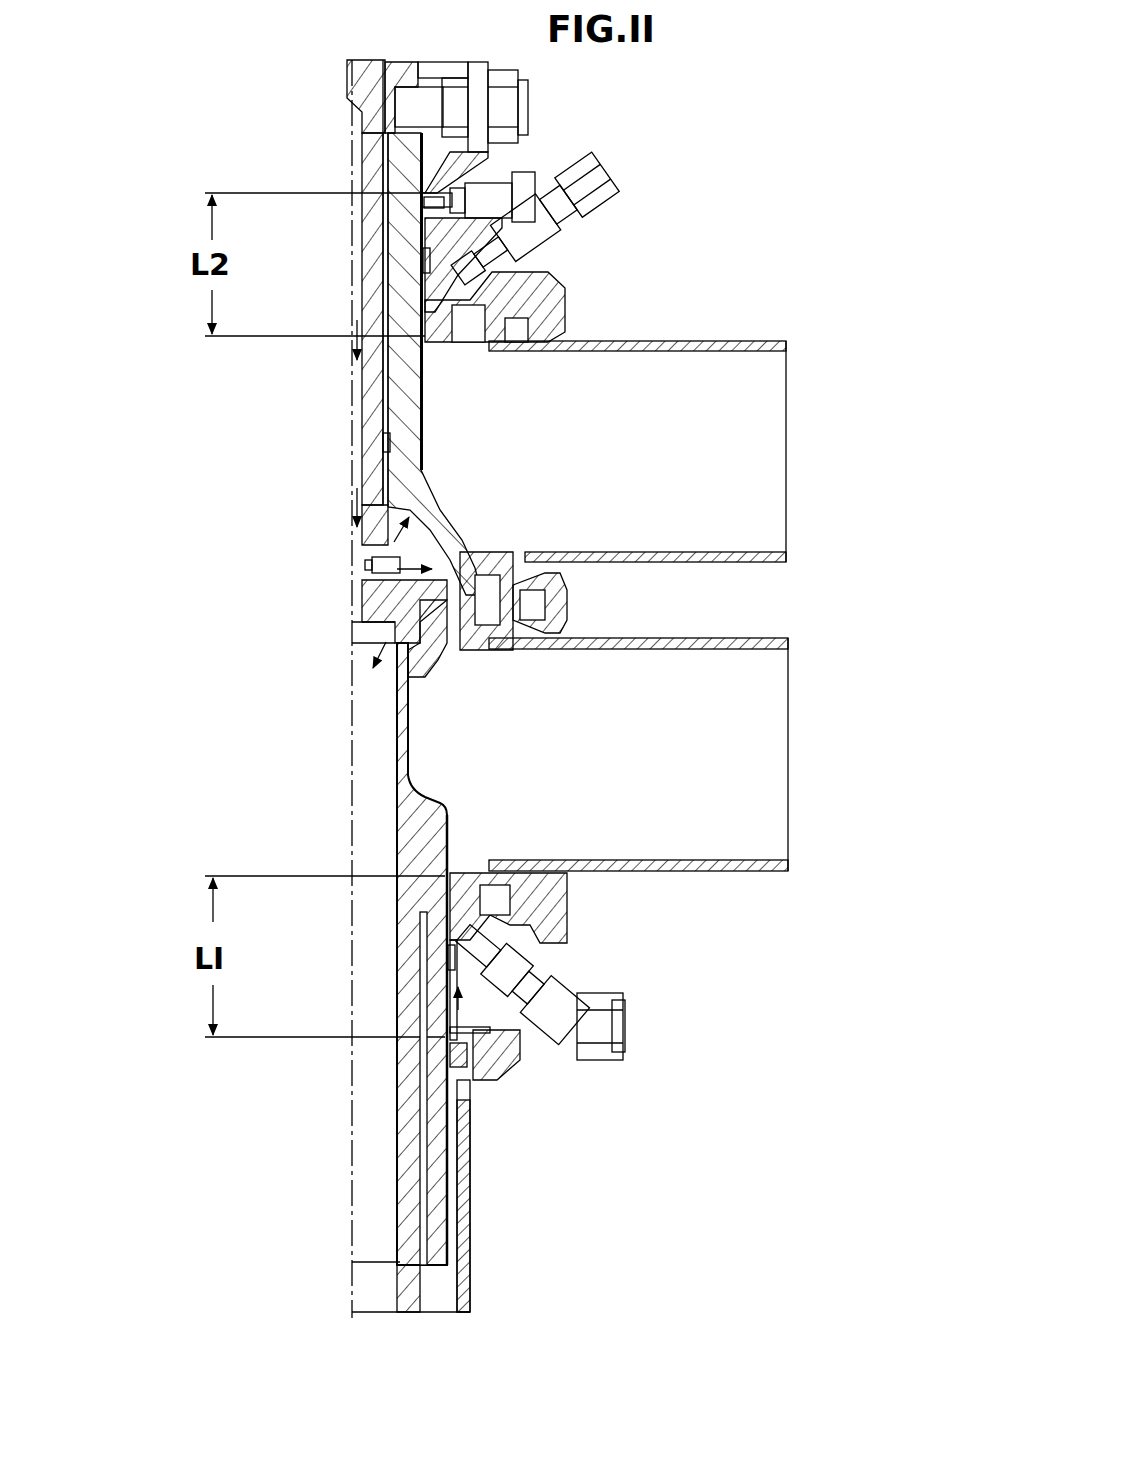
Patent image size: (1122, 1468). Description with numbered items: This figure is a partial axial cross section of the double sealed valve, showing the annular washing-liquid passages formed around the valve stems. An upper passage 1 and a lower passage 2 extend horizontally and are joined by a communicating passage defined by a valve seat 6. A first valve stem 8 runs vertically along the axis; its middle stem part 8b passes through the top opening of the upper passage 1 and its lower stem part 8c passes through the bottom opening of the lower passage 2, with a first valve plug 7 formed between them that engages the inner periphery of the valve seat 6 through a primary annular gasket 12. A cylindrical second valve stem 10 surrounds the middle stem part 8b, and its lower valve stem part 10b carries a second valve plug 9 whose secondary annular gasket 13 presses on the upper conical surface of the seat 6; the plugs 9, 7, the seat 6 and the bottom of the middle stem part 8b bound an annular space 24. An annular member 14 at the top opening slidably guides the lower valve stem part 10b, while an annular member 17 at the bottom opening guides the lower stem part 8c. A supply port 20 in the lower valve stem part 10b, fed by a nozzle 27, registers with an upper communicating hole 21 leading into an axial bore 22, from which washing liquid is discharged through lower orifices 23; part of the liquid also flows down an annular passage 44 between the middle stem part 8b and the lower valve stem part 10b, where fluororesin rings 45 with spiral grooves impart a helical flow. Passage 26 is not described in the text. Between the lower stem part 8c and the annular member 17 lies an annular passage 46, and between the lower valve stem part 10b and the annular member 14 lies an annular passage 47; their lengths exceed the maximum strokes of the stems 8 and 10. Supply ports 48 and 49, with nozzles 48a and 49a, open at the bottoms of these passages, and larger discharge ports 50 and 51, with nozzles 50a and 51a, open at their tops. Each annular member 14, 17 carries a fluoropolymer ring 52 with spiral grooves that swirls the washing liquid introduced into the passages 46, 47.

The upper passage 1 is at (749, 341).
The lower passage 2 is at (776, 640).
The valve seat 6 is at (529, 546).
The first valve plug 7 is at (432, 634).
The first valve stem 8 is at (396, 411).
The middle stem part 8b is at (378, 488).
The lower stem part 8c is at (409, 742).
The second valve plug 9 is at (459, 530).
The second valve stem 10 is at (432, 447).
The lower valve stem part 10b is at (470, 365).
The primary annular gasket 12 is at (466, 652).
The secondary annular gasket 13 is at (503, 543).
The annular member 14 is at (497, 156).
The annular member 17 is at (529, 1068).
The supply port 20 is at (364, 138).
The upper communicating hole 21 is at (364, 106).
The axial bore 22 is at (358, 378).
The lower orifices 23 is at (353, 543).
The annular space 24 is at (423, 540).
The passage 26 is at (372, 695).
The nozzle 27 is at (522, 107).
The annular passage 44 is at (392, 393).
The rings 45 is at (383, 447).
The annular passage 46 is at (460, 1015).
The annular passage 47 is at (433, 222).
The supply port 48 is at (473, 1037).
The nozzle 48a is at (624, 1027).
The supply port 49 is at (482, 352).
The nozzle 49a is at (582, 233).
The discharge port 50 is at (567, 921).
The nozzle 50a is at (574, 1006).
The discharge port 51 is at (507, 190).
The nozzle 51a is at (596, 186).
The fluoropolymer ring 52 is at (423, 268).